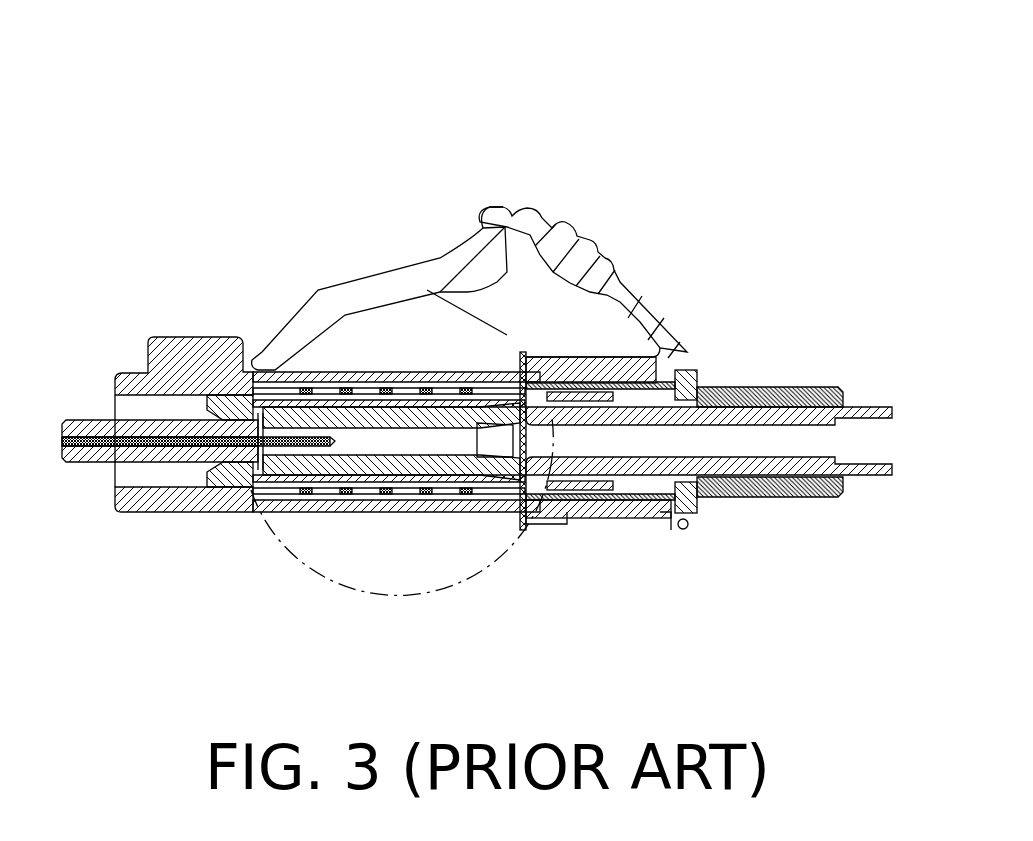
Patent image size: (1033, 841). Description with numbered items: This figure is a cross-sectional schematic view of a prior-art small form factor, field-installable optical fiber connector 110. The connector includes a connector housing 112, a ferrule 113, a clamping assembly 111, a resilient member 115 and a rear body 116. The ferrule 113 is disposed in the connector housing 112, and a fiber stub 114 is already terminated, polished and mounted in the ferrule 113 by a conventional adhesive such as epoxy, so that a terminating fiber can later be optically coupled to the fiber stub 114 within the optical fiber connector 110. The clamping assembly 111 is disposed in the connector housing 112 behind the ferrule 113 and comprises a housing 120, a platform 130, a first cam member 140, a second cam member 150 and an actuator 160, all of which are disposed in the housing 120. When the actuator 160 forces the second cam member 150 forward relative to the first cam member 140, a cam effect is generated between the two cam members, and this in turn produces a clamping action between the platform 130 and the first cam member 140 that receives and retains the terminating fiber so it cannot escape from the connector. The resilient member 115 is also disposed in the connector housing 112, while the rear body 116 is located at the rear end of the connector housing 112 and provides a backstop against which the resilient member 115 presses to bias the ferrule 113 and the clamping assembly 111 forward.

The optical fiber connector 110 is at (186, 37).
The clamping assembly 111 is at (340, 582).
The connector housing 112 is at (155, 502).
The ferrule 113 is at (97, 431).
The fiber stub 114 is at (170, 433).
The resilient member 115 is at (347, 372).
The rear body 116 is at (768, 392).
The housing 120 is at (262, 425).
The platform 130 is at (432, 470).
The first cam member 140 is at (374, 410).
The second cam member 150 is at (443, 415).
The actuator 160 is at (733, 468).